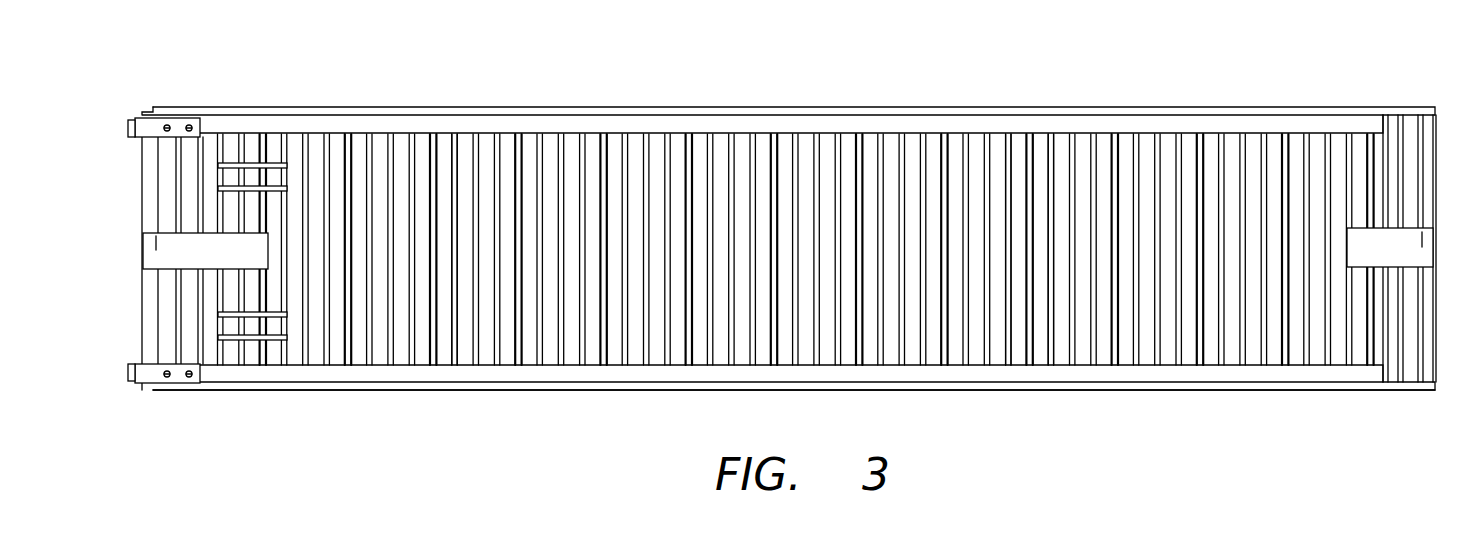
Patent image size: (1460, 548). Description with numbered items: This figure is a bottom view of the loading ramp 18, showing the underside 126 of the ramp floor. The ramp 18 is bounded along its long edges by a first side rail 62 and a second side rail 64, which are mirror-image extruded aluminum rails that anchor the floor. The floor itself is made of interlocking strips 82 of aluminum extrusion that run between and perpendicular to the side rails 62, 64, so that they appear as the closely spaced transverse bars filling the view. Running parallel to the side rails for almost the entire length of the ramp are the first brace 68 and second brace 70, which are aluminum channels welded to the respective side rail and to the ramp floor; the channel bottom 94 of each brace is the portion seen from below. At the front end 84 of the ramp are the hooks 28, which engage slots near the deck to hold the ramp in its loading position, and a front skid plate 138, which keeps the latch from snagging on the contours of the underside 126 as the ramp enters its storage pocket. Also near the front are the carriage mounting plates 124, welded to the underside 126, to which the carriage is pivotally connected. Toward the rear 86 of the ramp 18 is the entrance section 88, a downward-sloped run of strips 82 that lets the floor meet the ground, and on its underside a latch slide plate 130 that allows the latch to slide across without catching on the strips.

The loading ramp 18 is at (837, 60).
The hooks 28 is at (160, 120).
The first side rail 62 is at (1255, 110).
The second side rail 64 is at (1280, 385).
The first brace 68 is at (1125, 123).
The second brace 70 is at (1185, 370).
The interlocking strips 82 is at (720, 148).
The front end of the ramp 84 is at (145, 172).
The rear of the ramp 86 is at (1437, 145).
The entrance section 88 is at (1395, 373).
The channel bottom 94 is at (1013, 125).
The carriage mounting plates 124 is at (287, 188).
The underside of the ramp floor 126 is at (465, 148).
The latch slide plate 130 is at (1405, 247).
The front skid plate 138 is at (160, 243).